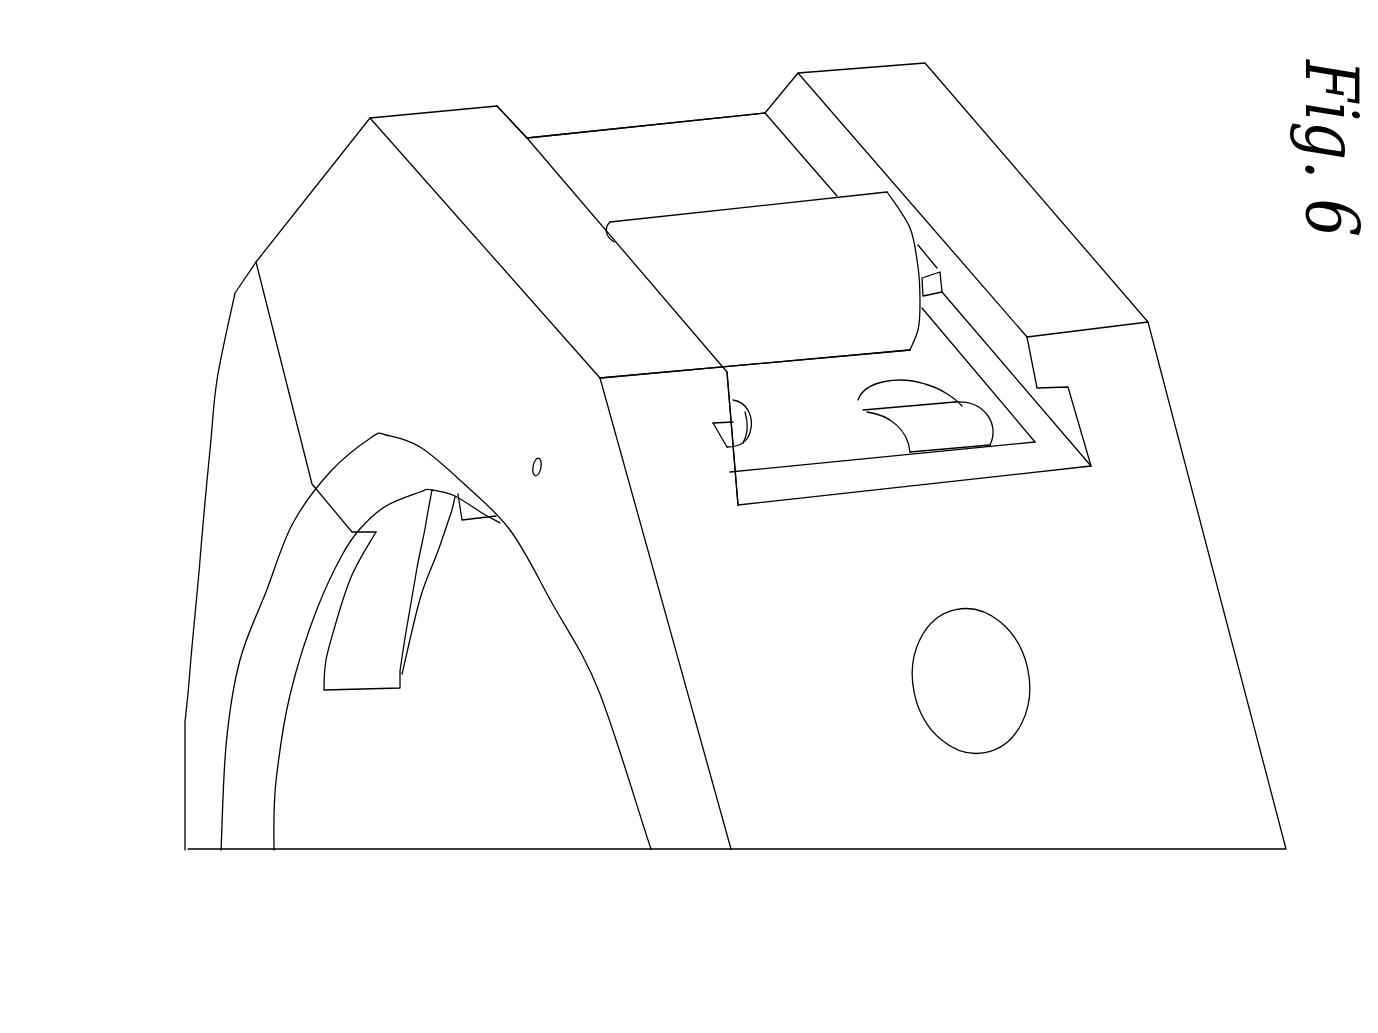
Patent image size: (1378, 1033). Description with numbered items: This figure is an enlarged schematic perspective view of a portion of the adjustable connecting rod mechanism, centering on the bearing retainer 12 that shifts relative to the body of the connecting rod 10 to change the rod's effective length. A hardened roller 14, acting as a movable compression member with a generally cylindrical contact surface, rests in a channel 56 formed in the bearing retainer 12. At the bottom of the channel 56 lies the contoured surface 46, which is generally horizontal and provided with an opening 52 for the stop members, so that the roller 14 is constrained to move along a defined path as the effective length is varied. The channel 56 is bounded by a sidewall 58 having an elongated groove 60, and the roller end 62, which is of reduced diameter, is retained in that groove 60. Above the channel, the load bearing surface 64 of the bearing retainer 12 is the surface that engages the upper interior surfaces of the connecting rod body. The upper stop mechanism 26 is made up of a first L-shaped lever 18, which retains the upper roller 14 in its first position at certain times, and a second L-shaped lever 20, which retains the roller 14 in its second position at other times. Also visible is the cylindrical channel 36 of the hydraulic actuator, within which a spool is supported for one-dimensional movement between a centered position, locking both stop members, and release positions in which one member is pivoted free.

The connecting rod 10 is at (1200, 497).
The bearing retainer 12 is at (1250, 692).
The roller 14 is at (688, 216).
The first L-shaped lever 18 is at (720, 421).
The second L-shaped lever 20 is at (955, 433).
The upper stop mechanism 26 is at (591, 101).
The cylindrical channel 36 is at (1024, 730).
The contoured surface 46 is at (844, 451).
The opening 52 is at (866, 385).
The channel 56 is at (668, 123).
The sidewall 58 is at (790, 106).
The elongated groove 60 is at (733, 460).
The roller end 62 is at (926, 270).
The load bearing surface 64 is at (516, 204).